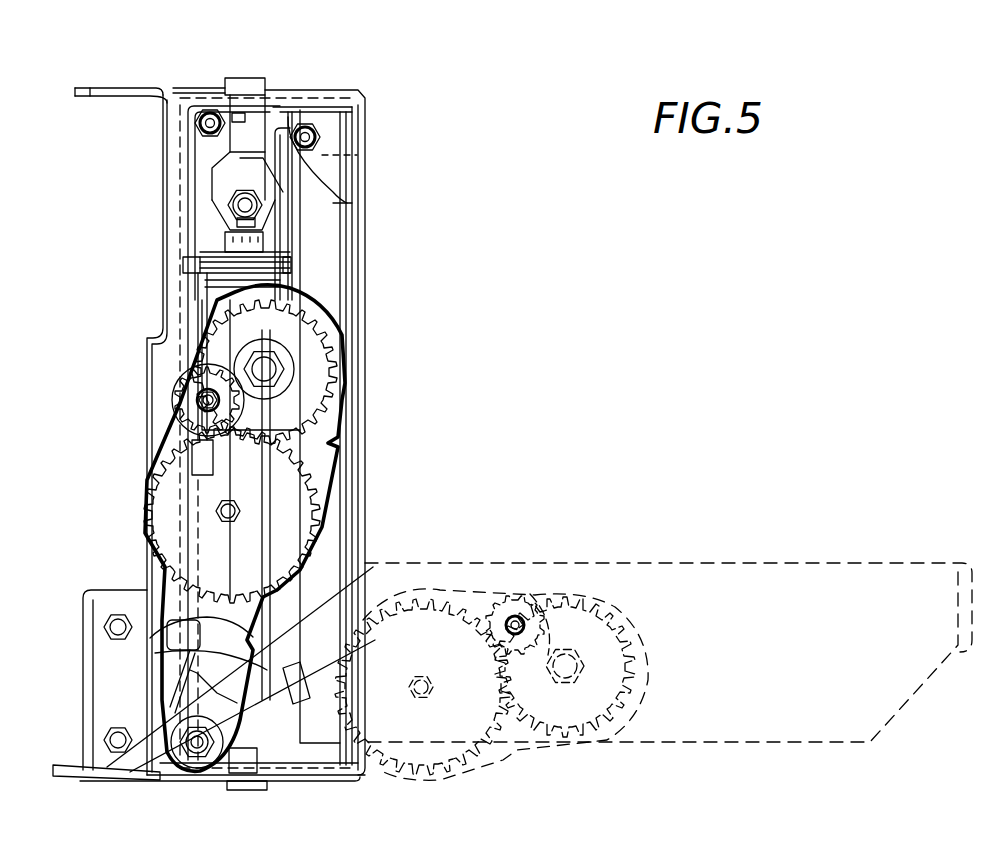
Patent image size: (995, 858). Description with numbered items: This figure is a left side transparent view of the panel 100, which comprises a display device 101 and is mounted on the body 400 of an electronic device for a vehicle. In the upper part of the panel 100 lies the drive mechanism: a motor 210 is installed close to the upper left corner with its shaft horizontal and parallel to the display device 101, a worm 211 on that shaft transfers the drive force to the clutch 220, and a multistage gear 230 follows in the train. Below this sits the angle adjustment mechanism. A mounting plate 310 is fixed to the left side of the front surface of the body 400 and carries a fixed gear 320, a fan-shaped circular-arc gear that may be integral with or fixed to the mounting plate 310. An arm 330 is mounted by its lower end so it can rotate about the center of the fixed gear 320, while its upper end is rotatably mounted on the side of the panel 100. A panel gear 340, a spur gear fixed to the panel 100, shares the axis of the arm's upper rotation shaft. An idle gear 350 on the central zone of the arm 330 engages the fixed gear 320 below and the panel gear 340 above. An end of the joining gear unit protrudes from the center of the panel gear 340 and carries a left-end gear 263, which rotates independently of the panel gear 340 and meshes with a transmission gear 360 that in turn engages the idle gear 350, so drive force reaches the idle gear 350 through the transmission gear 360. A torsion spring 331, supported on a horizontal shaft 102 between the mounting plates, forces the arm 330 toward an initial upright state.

The panel 100 is at (322, 95).
The display device 101 is at (357, 182).
The horizontal shaft 102 is at (160, 773).
The motor 210 is at (248, 162).
The worm 211 is at (233, 190).
The clutch 220 is at (222, 247).
The multistage gear 230 is at (207, 293).
The left-end gear 263 is at (293, 355).
The mounting plate 310 is at (113, 593).
The fixed gear 320 is at (297, 617).
The arm 330 is at (317, 300).
The torsion spring 331 is at (78, 777).
The panel gear 340 is at (300, 322).
The idle gear 350 is at (300, 485).
The transmission gear 360 is at (180, 388).
The body 400 is at (108, 88).